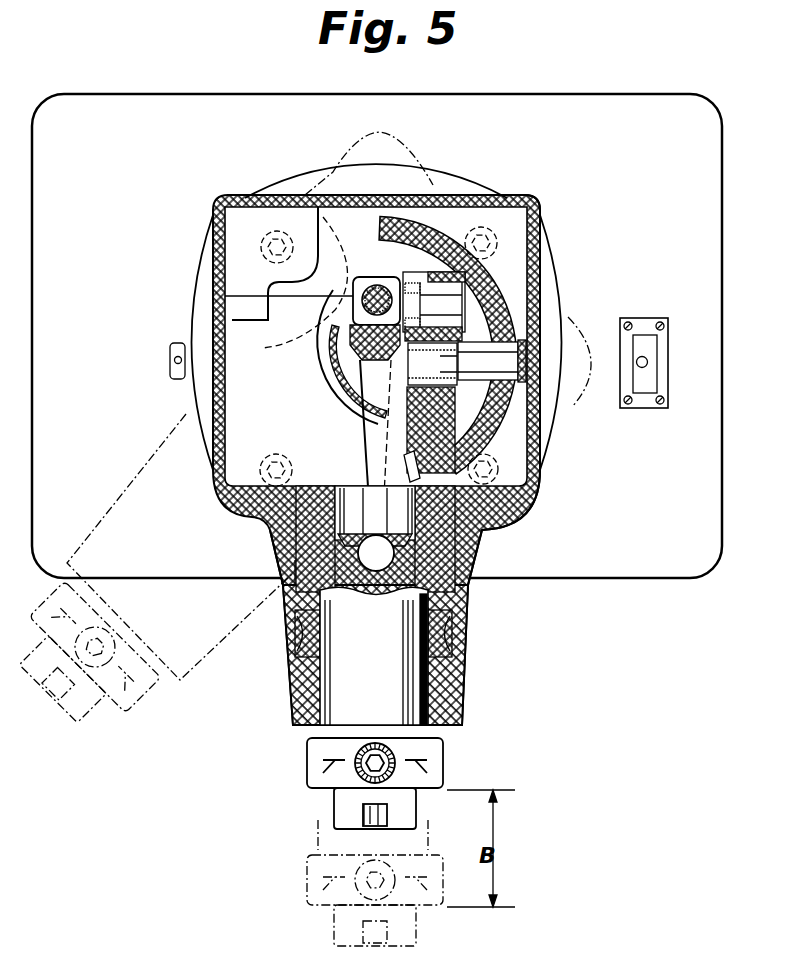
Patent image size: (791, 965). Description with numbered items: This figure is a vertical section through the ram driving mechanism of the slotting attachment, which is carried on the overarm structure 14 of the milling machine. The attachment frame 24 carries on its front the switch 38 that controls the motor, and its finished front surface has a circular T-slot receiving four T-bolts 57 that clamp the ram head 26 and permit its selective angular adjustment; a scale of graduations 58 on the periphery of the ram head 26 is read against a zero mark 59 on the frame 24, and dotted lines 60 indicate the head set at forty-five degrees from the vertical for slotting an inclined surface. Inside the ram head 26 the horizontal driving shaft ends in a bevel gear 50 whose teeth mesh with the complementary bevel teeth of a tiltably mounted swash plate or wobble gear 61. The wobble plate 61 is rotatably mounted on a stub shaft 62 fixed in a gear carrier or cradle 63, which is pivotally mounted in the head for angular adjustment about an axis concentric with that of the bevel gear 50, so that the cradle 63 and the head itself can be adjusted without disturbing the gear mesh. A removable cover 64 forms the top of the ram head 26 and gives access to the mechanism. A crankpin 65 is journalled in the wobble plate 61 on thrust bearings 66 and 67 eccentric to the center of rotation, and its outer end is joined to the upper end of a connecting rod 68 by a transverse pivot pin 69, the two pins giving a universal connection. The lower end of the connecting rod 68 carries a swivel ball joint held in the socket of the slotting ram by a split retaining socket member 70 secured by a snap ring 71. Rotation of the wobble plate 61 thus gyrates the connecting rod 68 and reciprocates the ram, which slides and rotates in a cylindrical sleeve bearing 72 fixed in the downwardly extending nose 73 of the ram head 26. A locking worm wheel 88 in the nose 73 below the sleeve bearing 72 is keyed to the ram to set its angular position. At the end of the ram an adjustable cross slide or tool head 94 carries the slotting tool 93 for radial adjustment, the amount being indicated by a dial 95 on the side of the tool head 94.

The overarm structure 14 is at (549, 265).
The frame 24 is at (626, 562).
The ram head 26 is at (538, 507).
The switch 38 is at (650, 362).
The bevel gear 50 is at (333, 380).
The T-bolts 57 is at (271, 238).
The scale of graduations 58 is at (205, 402).
The zero mark 59 is at (172, 372).
The dotted lines 60 is at (193, 680).
The wobble gear 61 is at (376, 447).
The stub shaft 62 is at (503, 362).
The cradle 63 is at (372, 232).
The removable cover 64 is at (528, 206).
The crankpin 65 is at (462, 332).
The thrust bearing 66 is at (432, 364).
The thrust bearing 67 is at (447, 372).
The connecting rod 68 is at (362, 436).
The pivot pin 69 is at (355, 298).
The split retaining socket member 70 is at (399, 511).
The snap ring 71 is at (351, 511).
The sleeve bearing 72 is at (455, 551).
The nose 73 is at (455, 691).
The worm wheel 88 is at (300, 652).
The slotting tool 93 is at (378, 823).
The tool head 94 is at (443, 766).
The dial 95 is at (356, 756).